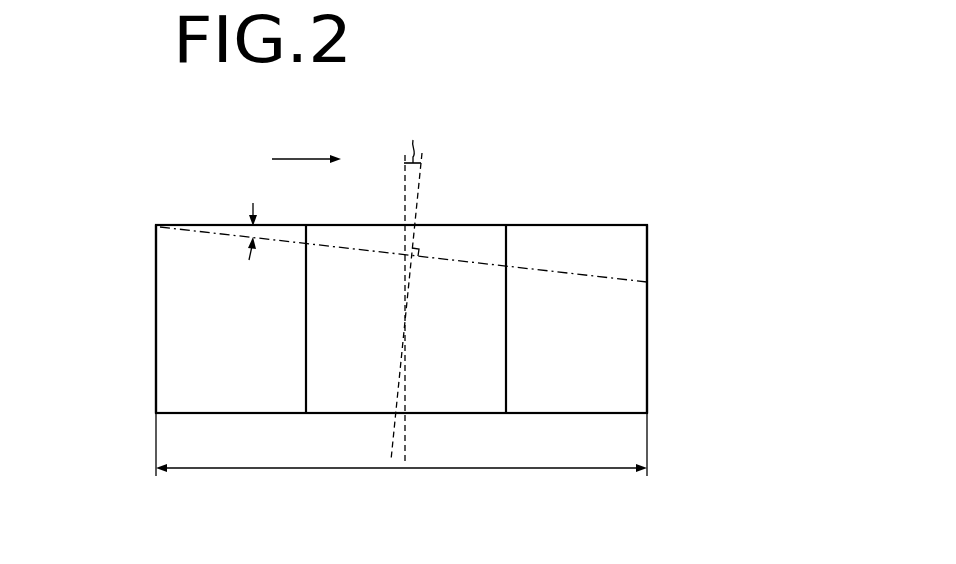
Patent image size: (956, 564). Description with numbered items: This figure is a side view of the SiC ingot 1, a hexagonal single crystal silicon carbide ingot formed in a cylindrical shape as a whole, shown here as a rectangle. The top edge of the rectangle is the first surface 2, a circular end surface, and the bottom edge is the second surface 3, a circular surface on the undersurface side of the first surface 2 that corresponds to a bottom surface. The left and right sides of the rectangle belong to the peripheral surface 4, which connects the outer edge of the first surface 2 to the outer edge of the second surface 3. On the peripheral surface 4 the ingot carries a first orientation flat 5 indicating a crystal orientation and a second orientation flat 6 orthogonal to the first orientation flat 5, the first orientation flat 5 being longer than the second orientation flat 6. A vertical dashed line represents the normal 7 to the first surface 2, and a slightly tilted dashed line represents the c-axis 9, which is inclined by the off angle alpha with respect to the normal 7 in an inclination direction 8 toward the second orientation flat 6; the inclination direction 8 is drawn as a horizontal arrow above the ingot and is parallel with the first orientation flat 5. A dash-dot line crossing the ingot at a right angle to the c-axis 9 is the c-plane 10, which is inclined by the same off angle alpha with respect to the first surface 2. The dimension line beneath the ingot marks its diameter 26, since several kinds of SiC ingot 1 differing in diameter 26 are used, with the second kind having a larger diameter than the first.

The SiC ingot 1 is at (148, 254).
The first surface 2 is at (597, 225).
The second surface 3 is at (182, 413).
The peripheral surface 4 is at (163, 308).
The first orientation flat 5 is at (464, 413).
The second orientation flat 6 is at (647, 362).
The normal 7 is at (405, 182).
The inclination direction 8 is at (306, 158).
The c-axis 9 is at (421, 190).
The c-plane 10 is at (611, 277).
The diameter 26 is at (398, 469).